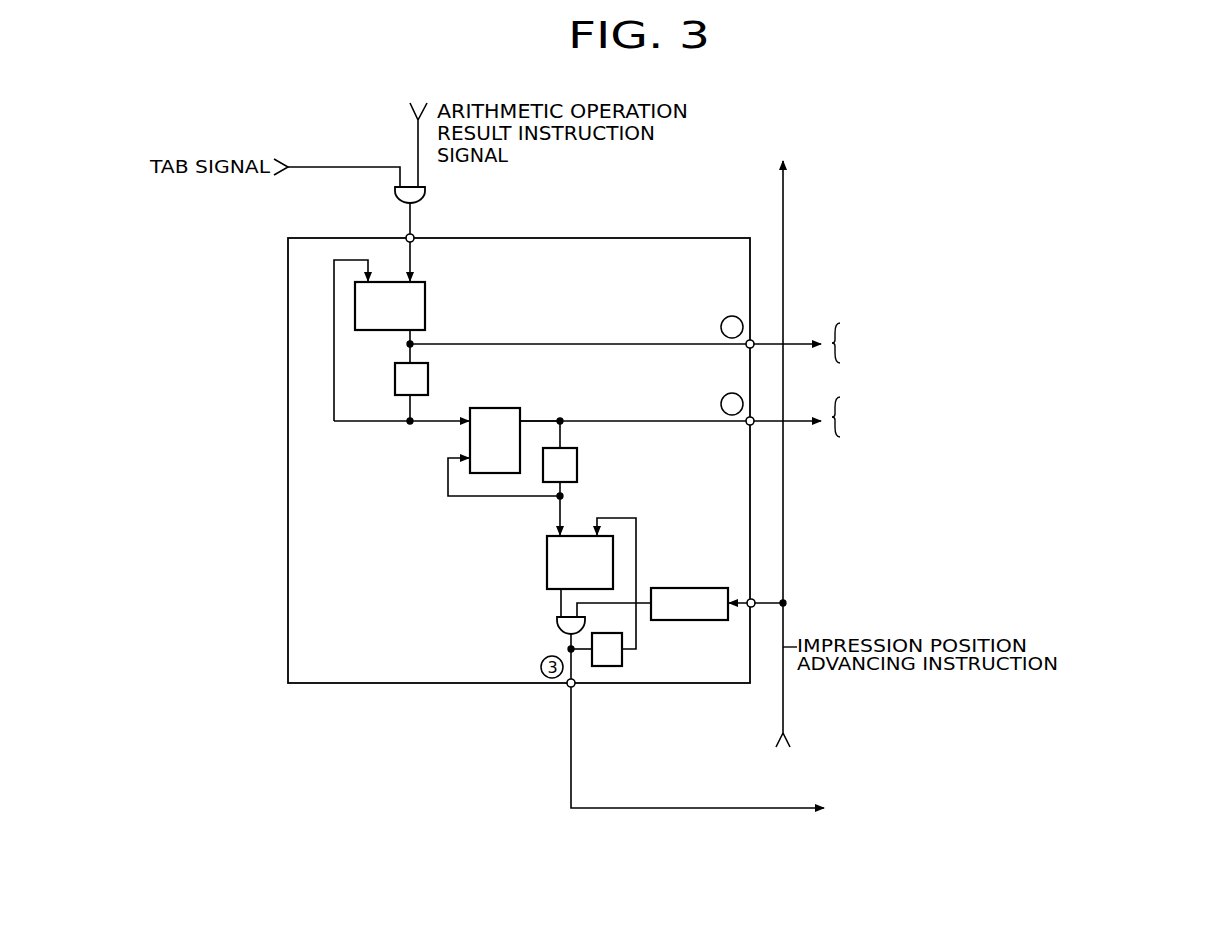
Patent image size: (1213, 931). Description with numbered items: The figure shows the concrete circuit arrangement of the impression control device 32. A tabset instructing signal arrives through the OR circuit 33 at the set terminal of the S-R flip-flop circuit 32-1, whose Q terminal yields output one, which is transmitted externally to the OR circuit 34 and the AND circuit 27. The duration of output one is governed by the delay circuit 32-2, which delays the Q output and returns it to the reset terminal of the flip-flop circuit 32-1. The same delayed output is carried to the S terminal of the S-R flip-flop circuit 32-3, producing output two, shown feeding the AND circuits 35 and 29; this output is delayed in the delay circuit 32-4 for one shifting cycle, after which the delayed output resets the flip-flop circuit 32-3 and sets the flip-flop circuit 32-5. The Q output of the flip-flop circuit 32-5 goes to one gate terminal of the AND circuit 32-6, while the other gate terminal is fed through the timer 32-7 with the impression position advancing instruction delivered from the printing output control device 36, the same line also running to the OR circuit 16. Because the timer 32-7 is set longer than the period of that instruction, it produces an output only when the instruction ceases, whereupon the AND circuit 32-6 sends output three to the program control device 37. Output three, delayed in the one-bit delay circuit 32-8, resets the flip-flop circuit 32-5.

The impression control device 32 is at (288, 505).
The OR circuit 33 is at (425, 195).
The S-R flip-flop circuit 32-1 is at (425, 298).
The delay circuit 32-2 is at (428, 378).
The S-R flip-flop circuit 32-3 is at (507, 408).
The delay circuit 32-4 is at (577, 465).
The flip-flop circuit 32-5 is at (547, 563).
The AND circuit 32-6 is at (557, 623).
The timer 32-7 is at (686, 588).
The one-bit delay circuit 32-8 is at (622, 661).
The OR circuit 16 is at (854, 434).
The OR circuit 34 is at (725, 339).
The AND circuit 27 is at (949, 355).
The AND circuit 35 is at (787, 415).
The AND circuit 29 is at (949, 428).
The printing output control device 36 is at (906, 753).
The program control device 37 is at (887, 754).